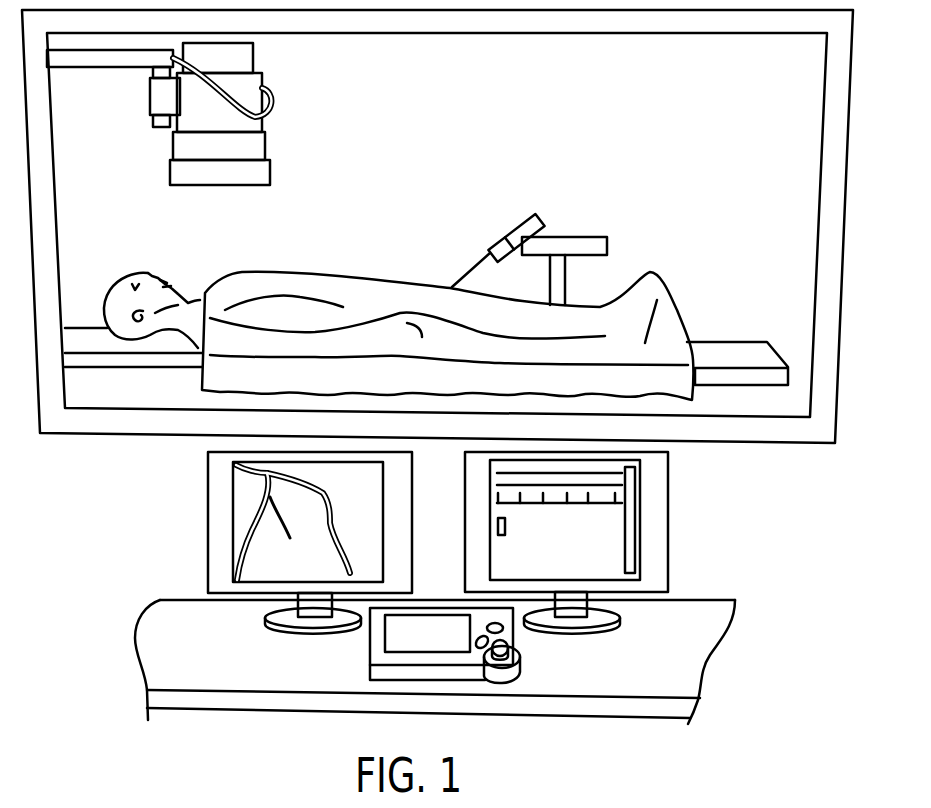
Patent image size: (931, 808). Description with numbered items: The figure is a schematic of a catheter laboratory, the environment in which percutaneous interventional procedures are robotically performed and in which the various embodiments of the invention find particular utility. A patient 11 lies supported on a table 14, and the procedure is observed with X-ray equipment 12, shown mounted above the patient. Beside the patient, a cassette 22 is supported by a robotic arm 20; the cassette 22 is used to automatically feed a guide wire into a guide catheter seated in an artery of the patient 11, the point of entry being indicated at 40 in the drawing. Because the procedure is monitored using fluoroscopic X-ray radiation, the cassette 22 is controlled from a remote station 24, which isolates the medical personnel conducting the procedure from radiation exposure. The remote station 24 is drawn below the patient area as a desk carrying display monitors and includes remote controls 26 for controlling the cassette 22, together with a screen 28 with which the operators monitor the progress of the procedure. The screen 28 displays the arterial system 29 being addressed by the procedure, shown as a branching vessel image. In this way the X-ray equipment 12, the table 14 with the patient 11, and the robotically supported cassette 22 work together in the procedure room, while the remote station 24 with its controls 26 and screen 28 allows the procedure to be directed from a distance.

The patient 11 is at (242, 277).
The X-ray equipment 12 is at (310, 92).
The table 14 is at (740, 348).
The robotic arm 20 is at (575, 212).
The cassette 22 is at (517, 222).
The remote station 24 is at (110, 660).
The remote controls 26 is at (540, 663).
The screen 28 is at (242, 498).
The arterial system 29 is at (245, 522).
The catheter insertion 40 is at (474, 241).